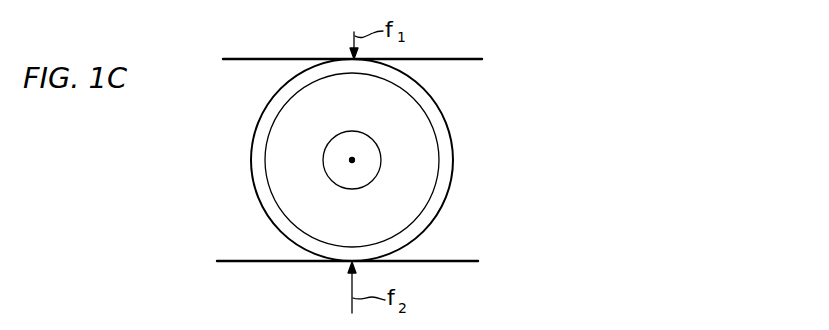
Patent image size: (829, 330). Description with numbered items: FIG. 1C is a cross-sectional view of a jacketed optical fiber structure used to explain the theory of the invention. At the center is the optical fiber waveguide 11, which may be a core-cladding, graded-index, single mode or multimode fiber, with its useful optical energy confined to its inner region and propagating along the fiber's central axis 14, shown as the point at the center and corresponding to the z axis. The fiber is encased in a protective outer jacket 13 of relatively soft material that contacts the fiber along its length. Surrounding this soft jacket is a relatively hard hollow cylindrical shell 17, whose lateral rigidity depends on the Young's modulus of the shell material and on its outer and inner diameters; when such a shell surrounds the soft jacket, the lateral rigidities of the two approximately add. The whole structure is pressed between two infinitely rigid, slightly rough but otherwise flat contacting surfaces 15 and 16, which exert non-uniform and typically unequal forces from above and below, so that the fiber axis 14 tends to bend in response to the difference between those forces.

The optical fiber waveguide 11 is at (375, 140).
The protective outer jacket 13 is at (425, 150).
The central axis 14 is at (350, 160).
The contacting surface 15 is at (238, 57).
The contacting surface 16 is at (235, 264).
The shell 17 is at (430, 217).